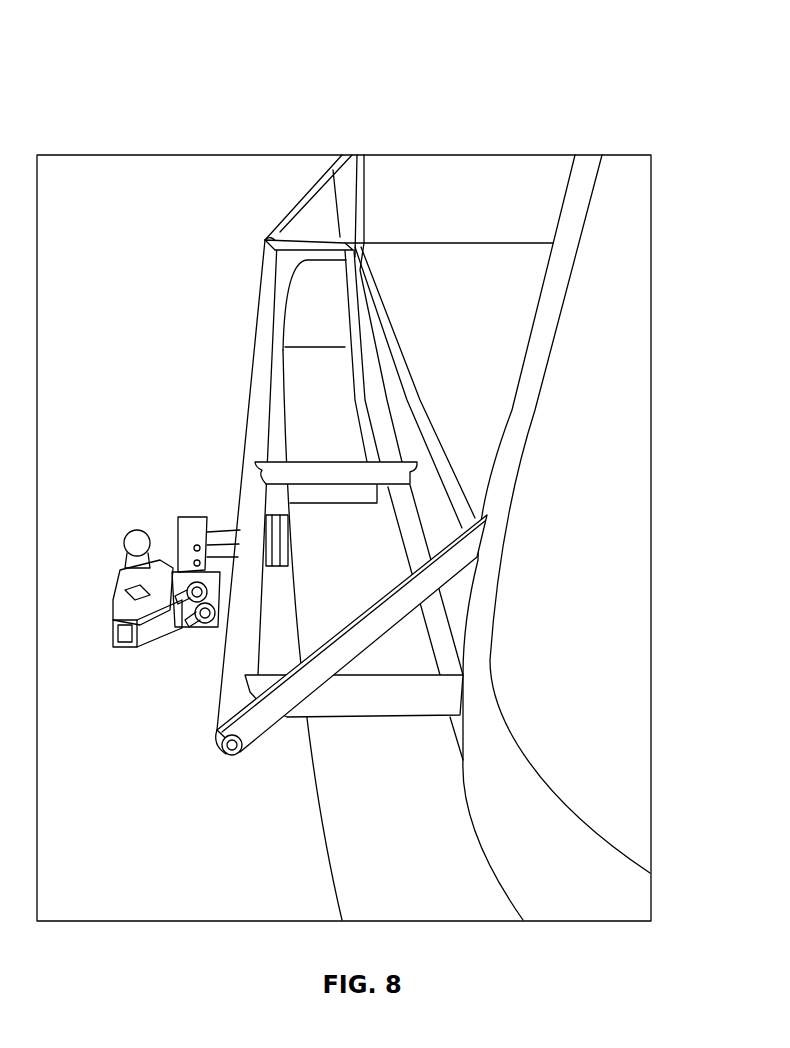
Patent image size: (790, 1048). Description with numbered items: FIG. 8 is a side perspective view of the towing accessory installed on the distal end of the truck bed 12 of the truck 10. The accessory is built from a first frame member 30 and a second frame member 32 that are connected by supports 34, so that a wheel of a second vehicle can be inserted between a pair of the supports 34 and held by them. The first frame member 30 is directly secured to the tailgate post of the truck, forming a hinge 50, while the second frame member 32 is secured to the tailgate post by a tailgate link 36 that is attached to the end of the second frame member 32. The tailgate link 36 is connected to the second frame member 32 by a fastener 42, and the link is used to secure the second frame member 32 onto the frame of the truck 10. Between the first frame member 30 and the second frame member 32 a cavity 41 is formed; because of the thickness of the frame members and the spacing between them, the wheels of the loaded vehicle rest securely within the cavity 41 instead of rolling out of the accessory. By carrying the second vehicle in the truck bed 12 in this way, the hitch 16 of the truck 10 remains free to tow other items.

The truck 10 is at (606, 105).
The truck bed 12 is at (420, 266).
The hitch 16 is at (131, 541).
The first frame member 30 is at (355, 255).
The second frame member 32 is at (260, 342).
The supports 34 is at (288, 472).
The tailgate link 36 is at (320, 672).
The cavities 41 is at (313, 427).
The fastener 42 is at (222, 747).
The hinge 50 is at (340, 242).